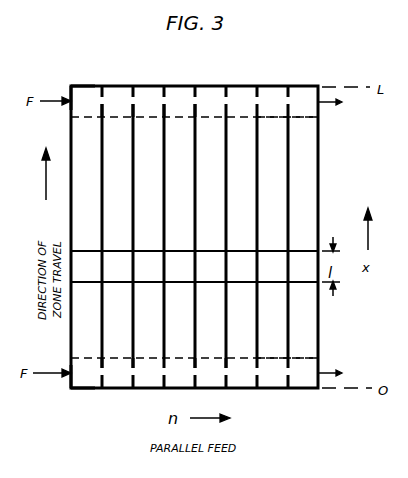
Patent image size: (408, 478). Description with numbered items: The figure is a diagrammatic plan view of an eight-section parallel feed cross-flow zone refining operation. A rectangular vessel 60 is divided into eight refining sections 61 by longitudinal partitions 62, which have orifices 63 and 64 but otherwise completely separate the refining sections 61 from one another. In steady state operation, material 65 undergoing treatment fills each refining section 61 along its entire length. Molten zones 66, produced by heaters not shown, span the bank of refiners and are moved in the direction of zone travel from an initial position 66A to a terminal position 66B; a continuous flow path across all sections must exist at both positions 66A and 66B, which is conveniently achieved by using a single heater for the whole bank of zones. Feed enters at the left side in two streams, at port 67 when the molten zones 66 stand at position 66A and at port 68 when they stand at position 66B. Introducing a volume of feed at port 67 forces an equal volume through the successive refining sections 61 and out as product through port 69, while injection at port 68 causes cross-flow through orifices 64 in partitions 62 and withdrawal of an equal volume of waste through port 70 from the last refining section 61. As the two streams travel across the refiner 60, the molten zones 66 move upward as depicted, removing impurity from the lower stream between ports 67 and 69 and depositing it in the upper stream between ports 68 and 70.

The rectangular vessel 60 is at (318, 178).
The refining sections 61 is at (148, 375).
The longitudinal partitions 62 is at (107, 128).
The orifices 63 is at (165, 373).
The orifices 64 is at (215, 102).
The material undergoing treatment 65 is at (272, 323).
The molten zones 66 is at (237, 267).
The initial position 66A is at (303, 368).
The terminal position 66B is at (273, 112).
The feed stream 67 is at (69, 376).
The feed stream 68 is at (70, 96).
The withdrawal port 69 is at (320, 373).
The withdrawal port 70 is at (321, 104).